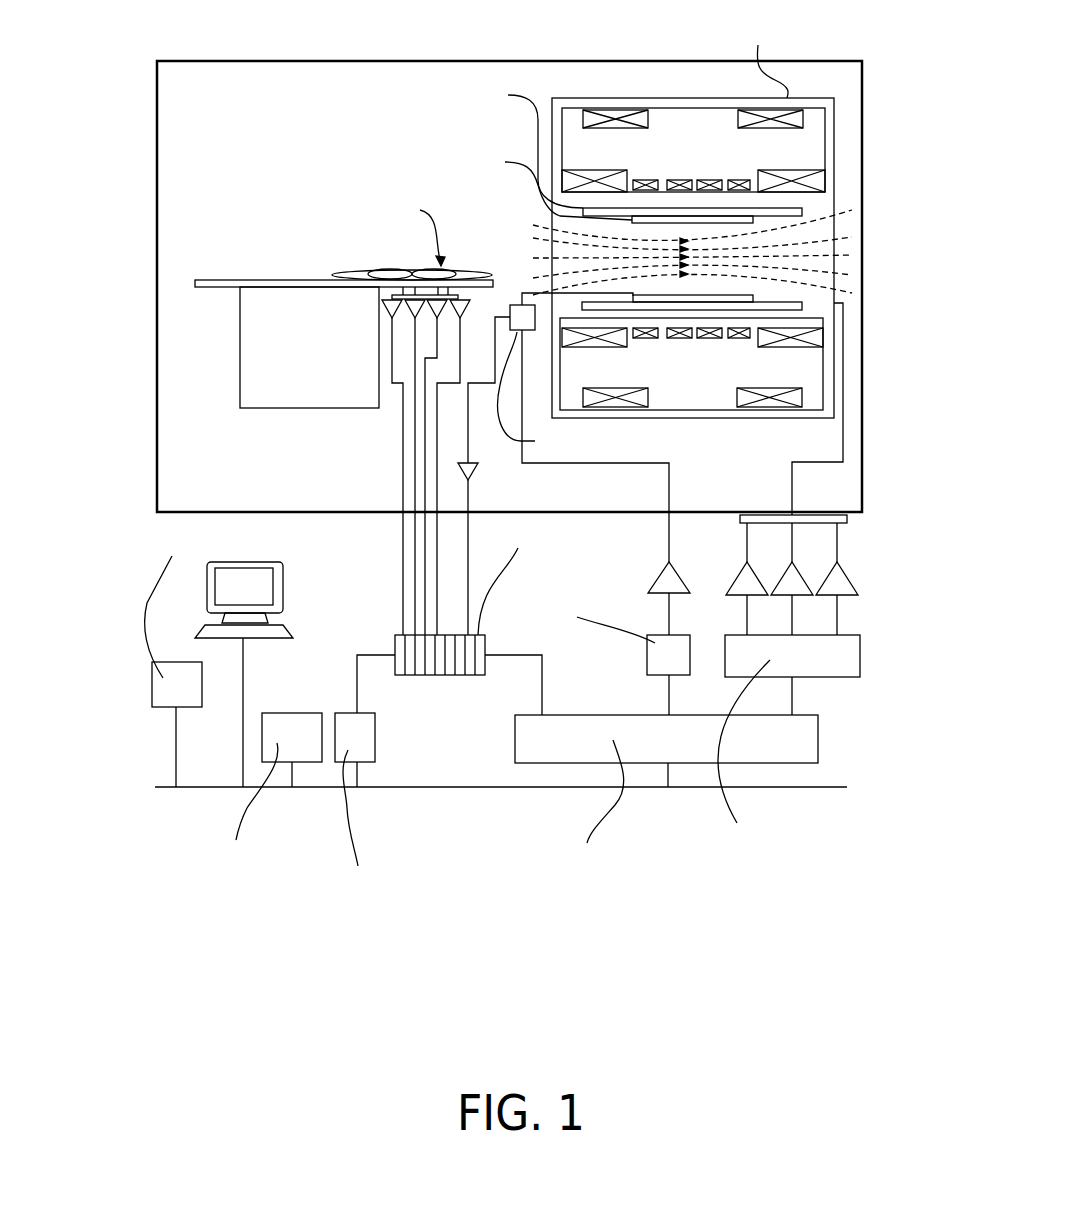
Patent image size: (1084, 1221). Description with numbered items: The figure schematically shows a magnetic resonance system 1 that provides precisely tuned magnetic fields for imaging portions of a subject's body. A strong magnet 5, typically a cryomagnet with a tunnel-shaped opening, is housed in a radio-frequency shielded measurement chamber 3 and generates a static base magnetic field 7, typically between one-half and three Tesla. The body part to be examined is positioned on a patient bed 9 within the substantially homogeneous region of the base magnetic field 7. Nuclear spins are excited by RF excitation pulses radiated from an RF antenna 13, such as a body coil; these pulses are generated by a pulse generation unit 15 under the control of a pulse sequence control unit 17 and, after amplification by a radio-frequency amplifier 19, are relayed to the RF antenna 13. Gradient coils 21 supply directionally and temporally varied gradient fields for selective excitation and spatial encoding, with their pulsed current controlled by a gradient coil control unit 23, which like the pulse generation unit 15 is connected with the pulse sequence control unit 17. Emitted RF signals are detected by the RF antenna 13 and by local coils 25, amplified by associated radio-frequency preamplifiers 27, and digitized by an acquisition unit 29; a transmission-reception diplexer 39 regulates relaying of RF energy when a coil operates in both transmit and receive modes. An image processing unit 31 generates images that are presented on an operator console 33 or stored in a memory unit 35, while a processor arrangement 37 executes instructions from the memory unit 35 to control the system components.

The magnetic resonance system 1 is at (482, 802).
The radio-frequency shielded measurement chamber 3 is at (456, 60).
The magnet 5 is at (725, 98).
The base magnetic field 7 is at (545, 258).
The patient bed 9 is at (226, 280).
The RF antenna 13 is at (722, 295).
The pulse generation unit 15 is at (647, 648).
The pulse sequence control unit 17 is at (569, 714).
The radio-frequency amplifier 19 is at (648, 580).
The gradient coils 21 is at (662, 208).
The gradient coil control unit 23 is at (840, 679).
The local coils 25 is at (363, 268).
The radio-frequency preamplifiers 27 is at (462, 308).
The acquisition unit 29 is at (437, 676).
The image processing unit 31 is at (375, 747).
The operator console 33 is at (283, 585).
The memory unit 35 is at (170, 662).
The processor arrangement 37 is at (293, 713).
The transmission-reception diplexer 39 is at (522, 332).